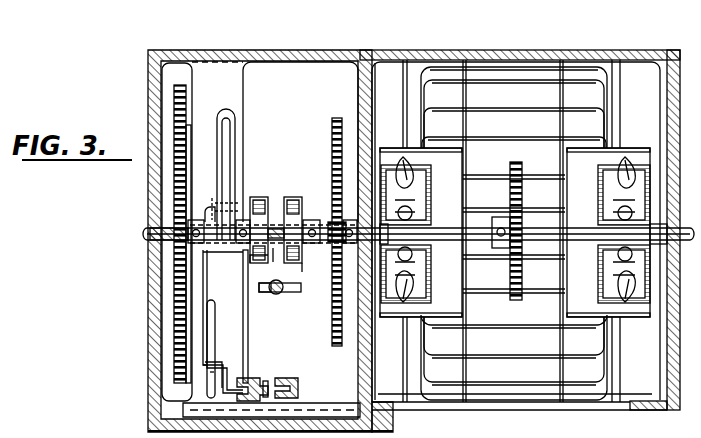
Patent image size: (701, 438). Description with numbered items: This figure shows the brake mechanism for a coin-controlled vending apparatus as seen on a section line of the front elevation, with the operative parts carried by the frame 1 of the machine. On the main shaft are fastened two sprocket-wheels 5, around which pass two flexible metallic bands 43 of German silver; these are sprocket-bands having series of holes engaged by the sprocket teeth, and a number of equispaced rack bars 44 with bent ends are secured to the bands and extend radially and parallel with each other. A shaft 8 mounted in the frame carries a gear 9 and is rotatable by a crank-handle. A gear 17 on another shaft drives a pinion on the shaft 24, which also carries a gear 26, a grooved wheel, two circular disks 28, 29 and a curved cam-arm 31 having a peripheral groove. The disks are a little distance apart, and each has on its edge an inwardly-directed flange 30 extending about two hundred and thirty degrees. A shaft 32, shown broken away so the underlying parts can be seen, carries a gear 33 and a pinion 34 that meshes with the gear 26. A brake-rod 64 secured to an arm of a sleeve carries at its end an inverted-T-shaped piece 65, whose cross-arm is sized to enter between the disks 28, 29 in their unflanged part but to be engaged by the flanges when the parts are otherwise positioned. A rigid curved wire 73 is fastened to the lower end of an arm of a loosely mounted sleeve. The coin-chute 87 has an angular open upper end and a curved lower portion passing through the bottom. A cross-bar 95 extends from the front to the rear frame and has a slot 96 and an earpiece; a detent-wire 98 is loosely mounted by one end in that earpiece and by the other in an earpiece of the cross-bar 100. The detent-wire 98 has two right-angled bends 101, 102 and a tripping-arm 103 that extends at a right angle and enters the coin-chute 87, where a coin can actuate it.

The frame 1 is at (155, 282).
The sprocket-wheel 5 is at (515, 229).
The shaft 8 is at (540, 242).
The gear 9 is at (522, 218).
The gear 17 is at (205, 365).
The shaft 24 is at (273, 262).
The gear 26 is at (332, 125).
The circular disk 28 is at (250, 262).
The circular disk 29 is at (303, 268).
The inwardly-directed flange 30 is at (272, 216).
The curved cam-arm 31 is at (223, 167).
The shaft 32 is at (150, 232).
The gear 33 is at (186, 138).
The pinion 34 is at (344, 224).
The flexible metallic band 43 is at (392, 148).
The rack bar 44 is at (577, 68).
The brake-rod 64 is at (280, 293).
The inverted-T-shaped piece 65 is at (265, 292).
The rigid wire 73 is at (212, 373).
The coin-chute 87 is at (294, 382).
The cross-bar 95 is at (248, 335).
The slot 96 is at (215, 328).
The detent-wire 98 is at (208, 290).
The cross-bar 100 is at (324, 404).
The right-angled bend 101 is at (222, 358).
The right-angled bend 102 is at (215, 210).
The tripping-arm 103 is at (259, 380).